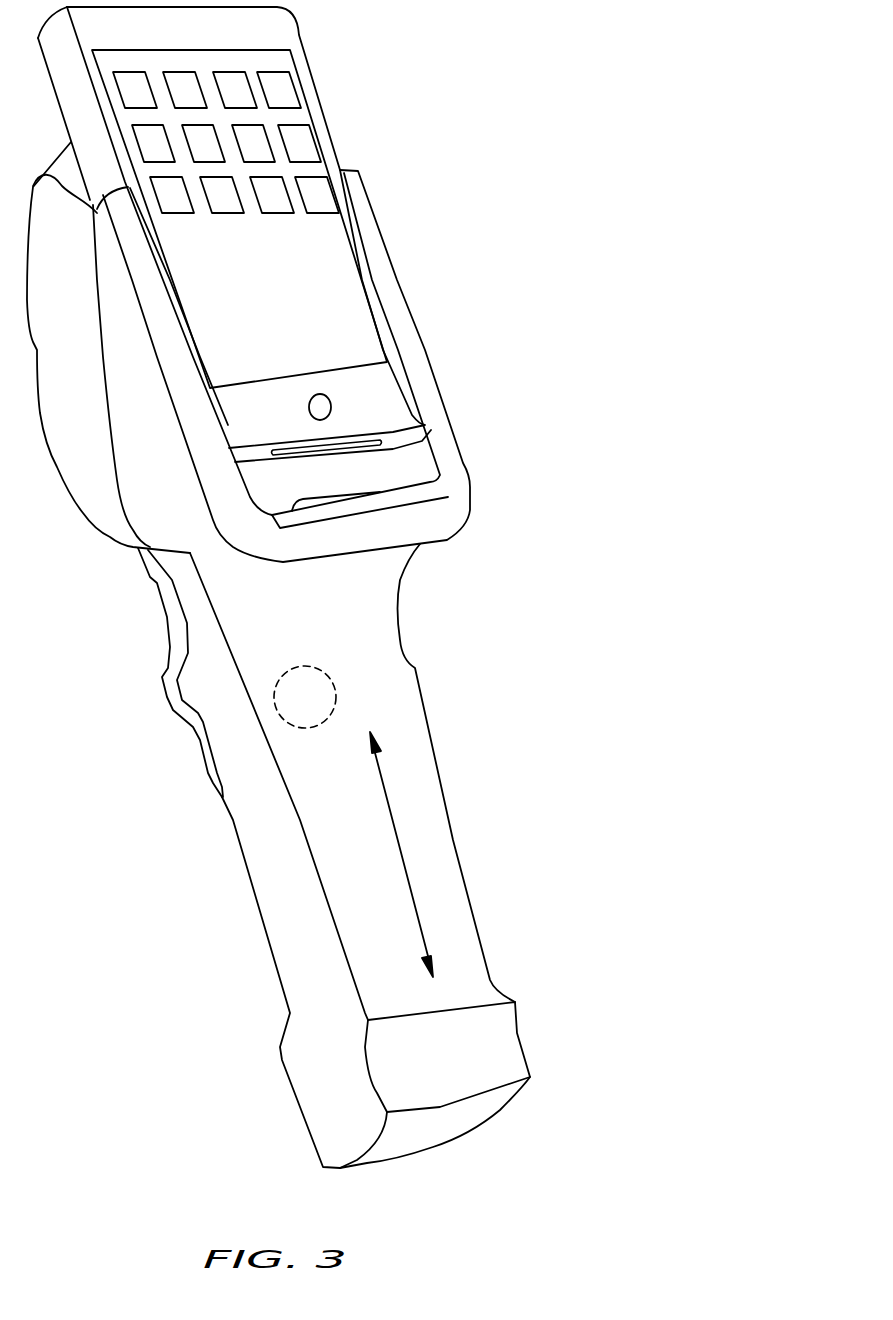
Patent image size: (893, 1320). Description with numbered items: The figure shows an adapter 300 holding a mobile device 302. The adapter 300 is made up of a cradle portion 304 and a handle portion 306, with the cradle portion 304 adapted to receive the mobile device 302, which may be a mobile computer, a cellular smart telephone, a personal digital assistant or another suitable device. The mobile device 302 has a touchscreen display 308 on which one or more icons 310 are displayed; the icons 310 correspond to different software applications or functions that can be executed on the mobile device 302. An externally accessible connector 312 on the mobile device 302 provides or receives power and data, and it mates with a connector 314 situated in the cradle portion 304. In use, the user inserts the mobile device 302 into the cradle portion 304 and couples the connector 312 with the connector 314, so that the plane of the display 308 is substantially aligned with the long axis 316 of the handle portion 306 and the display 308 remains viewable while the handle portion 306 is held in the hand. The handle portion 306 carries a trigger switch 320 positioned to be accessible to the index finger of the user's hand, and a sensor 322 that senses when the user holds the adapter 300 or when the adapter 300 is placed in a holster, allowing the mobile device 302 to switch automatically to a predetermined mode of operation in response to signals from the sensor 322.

The adapter 300 is at (415, 188).
The mobile device 302 is at (310, 63).
The cradle portion 304 is at (82, 321).
The handle portion 306 is at (450, 823).
The touchscreen display 308 is at (200, 50).
The icons 310 is at (230, 217).
The connector 312 is at (362, 443).
The connector 314 is at (363, 497).
The long axis 316 is at (395, 822).
The trigger switch 320 is at (167, 668).
The sensor 322 is at (307, 667).